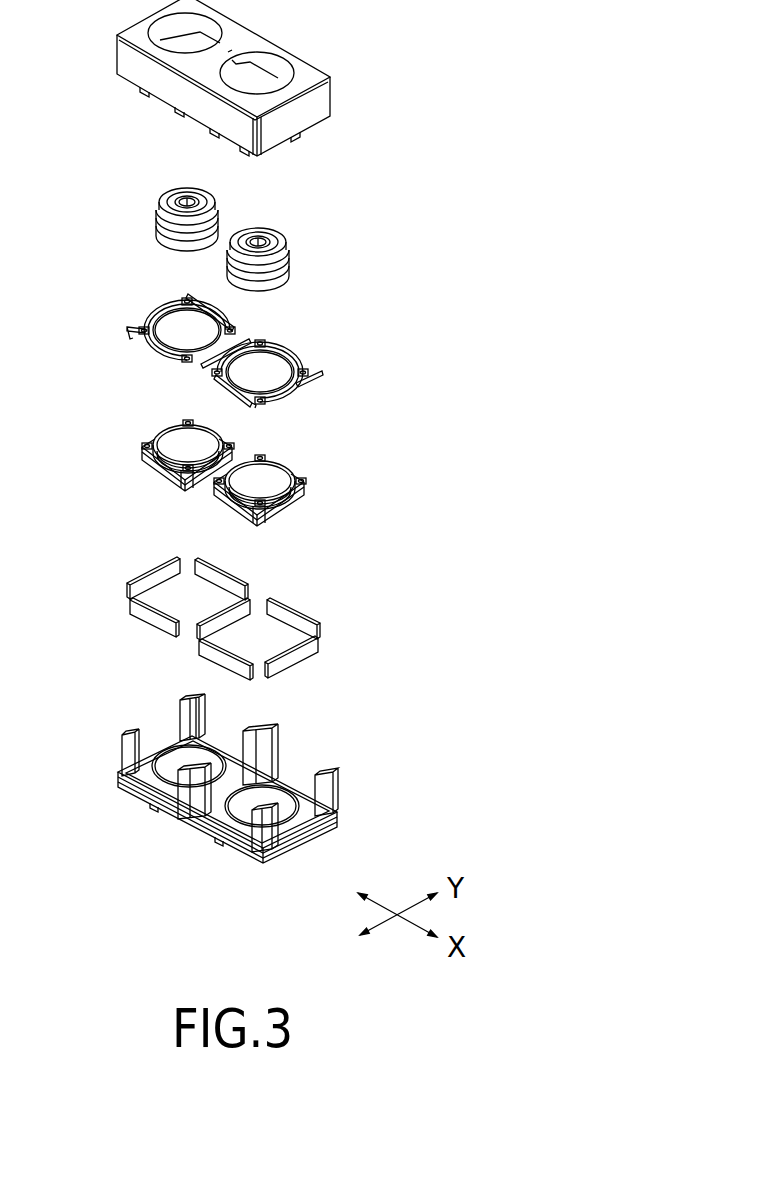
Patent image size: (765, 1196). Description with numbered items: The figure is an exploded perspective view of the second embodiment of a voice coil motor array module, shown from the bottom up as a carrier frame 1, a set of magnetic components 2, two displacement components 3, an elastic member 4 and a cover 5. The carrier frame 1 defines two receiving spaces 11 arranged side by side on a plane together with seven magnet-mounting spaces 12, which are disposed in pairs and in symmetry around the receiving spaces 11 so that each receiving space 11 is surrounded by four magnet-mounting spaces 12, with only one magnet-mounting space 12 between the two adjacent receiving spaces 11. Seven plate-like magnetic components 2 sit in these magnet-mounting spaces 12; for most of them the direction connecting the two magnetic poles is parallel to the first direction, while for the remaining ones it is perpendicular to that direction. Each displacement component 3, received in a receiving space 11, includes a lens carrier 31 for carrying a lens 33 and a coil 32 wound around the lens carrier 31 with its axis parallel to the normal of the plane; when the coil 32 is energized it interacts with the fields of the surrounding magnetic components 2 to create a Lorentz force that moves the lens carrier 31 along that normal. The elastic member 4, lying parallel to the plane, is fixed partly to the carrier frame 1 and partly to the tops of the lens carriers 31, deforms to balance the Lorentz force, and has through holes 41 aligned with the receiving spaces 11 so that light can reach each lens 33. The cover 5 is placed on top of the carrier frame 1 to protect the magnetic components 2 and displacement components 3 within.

The carrier frame 1 is at (220, 804).
The receiving space 11 is at (167, 768).
The magnet-mounting space 12 is at (168, 730).
The magnetic component 2 is at (137, 612).
The displacement component 3 is at (248, 471).
The lens carrier 31 is at (293, 477).
The coil 32 is at (297, 508).
The lens 33 is at (287, 250).
The elastic member 4 is at (220, 351).
The through hole 41 is at (182, 328).
The cover 5 is at (313, 98).